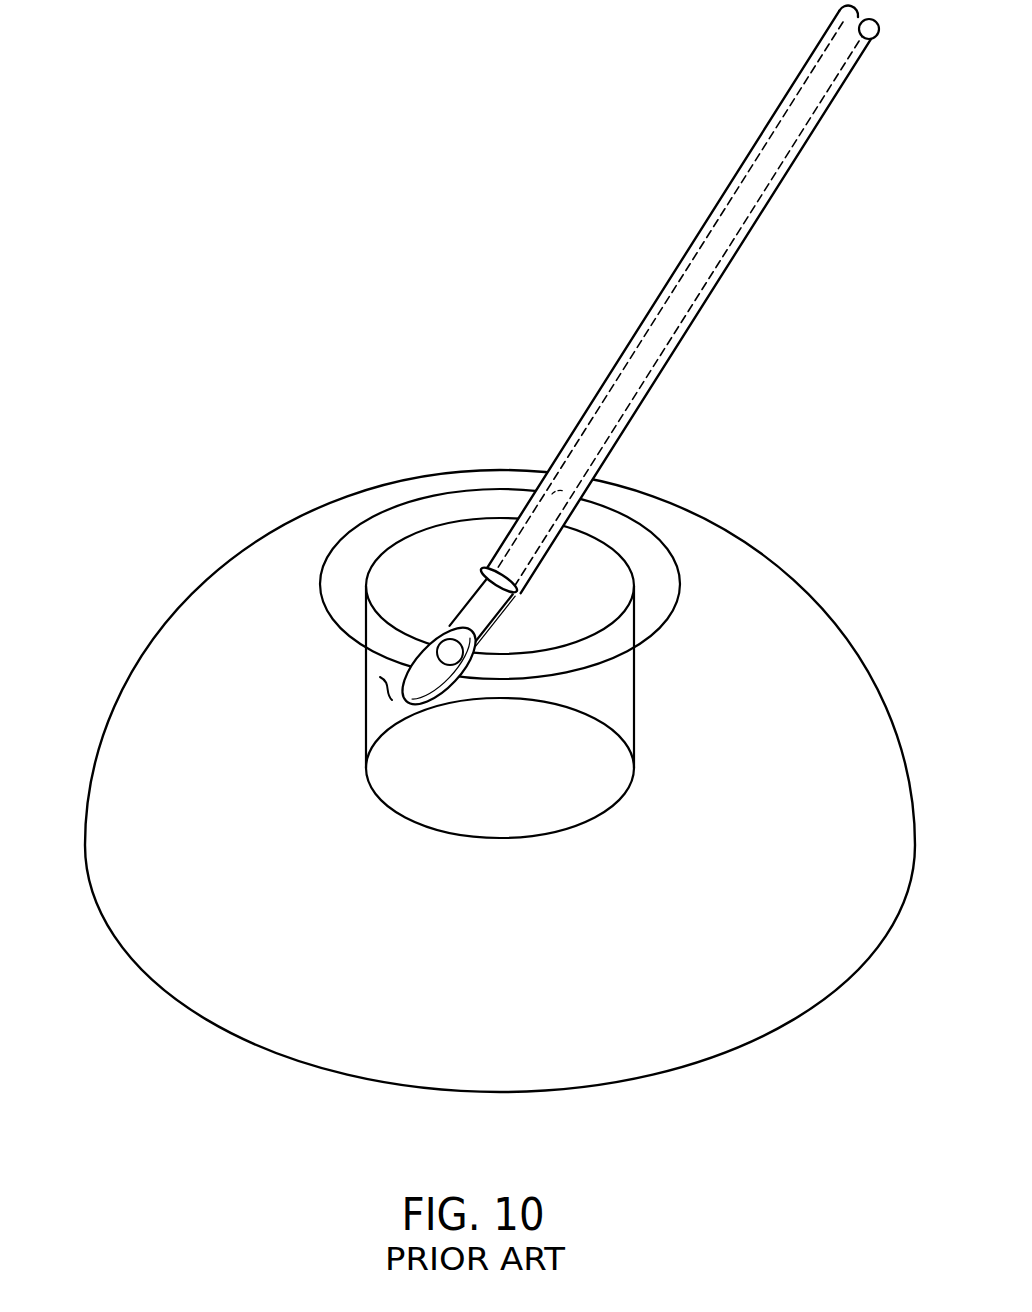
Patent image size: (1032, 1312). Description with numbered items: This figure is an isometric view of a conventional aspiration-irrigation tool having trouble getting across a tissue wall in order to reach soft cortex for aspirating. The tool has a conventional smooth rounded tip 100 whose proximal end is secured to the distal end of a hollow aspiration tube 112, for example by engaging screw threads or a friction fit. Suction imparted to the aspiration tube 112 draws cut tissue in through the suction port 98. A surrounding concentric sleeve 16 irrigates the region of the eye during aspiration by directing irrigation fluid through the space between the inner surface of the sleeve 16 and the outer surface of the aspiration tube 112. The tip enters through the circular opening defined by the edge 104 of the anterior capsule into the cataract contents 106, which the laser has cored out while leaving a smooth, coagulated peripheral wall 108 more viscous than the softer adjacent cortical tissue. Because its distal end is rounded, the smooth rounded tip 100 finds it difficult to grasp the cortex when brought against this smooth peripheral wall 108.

The surrounding concentric sleeve 16 is at (573, 361).
The aspiration tube 112 is at (770, 213).
The edge of the capsule 104 is at (485, 517).
The suction port 98 is at (452, 645).
The smooth rounded tip 100 is at (425, 667).
The cataract contents 106 is at (185, 596).
The smooth peripheral wall 108 is at (383, 690).